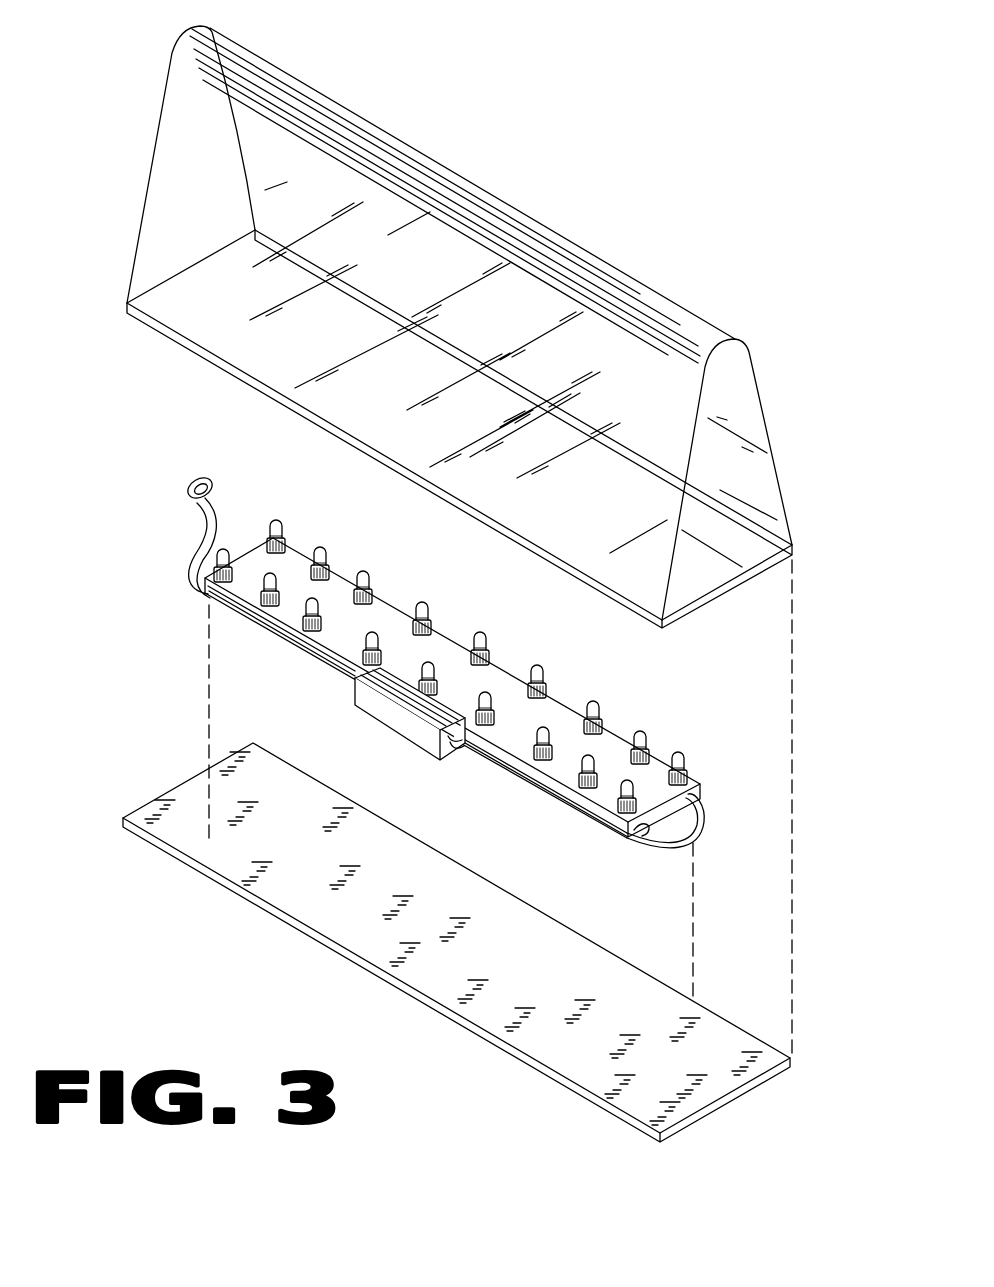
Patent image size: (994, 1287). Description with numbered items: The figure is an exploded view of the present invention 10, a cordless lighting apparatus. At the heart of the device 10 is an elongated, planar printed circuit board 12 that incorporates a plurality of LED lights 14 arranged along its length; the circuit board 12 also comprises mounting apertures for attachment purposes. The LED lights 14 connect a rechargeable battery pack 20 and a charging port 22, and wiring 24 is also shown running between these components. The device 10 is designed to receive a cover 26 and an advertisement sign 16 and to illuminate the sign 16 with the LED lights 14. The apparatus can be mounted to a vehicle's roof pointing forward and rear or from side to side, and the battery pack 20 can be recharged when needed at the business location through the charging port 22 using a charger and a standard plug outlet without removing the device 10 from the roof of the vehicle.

The present invention 10 is at (805, 337).
The printed circuit board 12 is at (222, 593).
The LED lights 14 is at (585, 776).
The advertisement sign 16 is at (498, 203).
The rechargeable battery pack 20 is at (353, 693).
The charging port 22 is at (183, 495).
The wiring 24 is at (643, 841).
The cover 26 is at (613, 270).